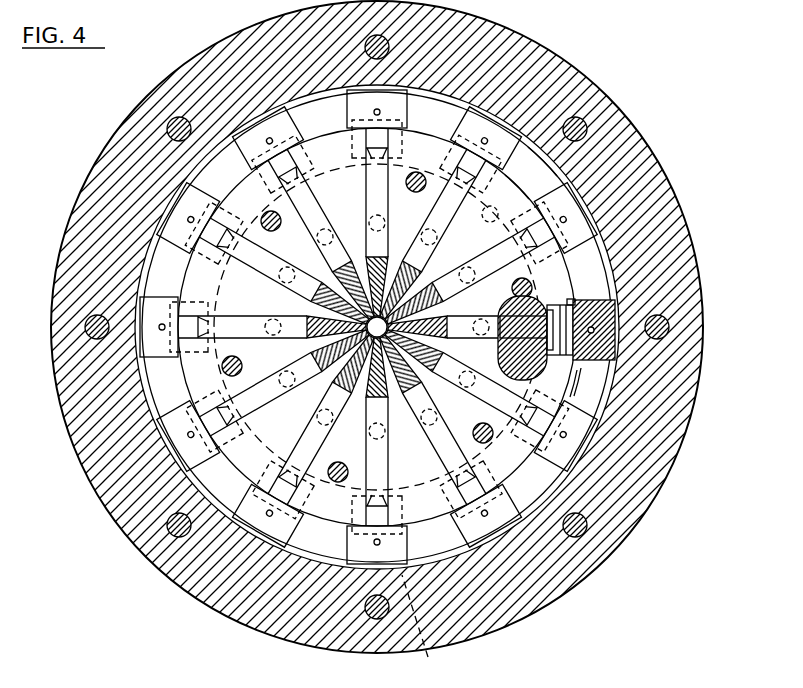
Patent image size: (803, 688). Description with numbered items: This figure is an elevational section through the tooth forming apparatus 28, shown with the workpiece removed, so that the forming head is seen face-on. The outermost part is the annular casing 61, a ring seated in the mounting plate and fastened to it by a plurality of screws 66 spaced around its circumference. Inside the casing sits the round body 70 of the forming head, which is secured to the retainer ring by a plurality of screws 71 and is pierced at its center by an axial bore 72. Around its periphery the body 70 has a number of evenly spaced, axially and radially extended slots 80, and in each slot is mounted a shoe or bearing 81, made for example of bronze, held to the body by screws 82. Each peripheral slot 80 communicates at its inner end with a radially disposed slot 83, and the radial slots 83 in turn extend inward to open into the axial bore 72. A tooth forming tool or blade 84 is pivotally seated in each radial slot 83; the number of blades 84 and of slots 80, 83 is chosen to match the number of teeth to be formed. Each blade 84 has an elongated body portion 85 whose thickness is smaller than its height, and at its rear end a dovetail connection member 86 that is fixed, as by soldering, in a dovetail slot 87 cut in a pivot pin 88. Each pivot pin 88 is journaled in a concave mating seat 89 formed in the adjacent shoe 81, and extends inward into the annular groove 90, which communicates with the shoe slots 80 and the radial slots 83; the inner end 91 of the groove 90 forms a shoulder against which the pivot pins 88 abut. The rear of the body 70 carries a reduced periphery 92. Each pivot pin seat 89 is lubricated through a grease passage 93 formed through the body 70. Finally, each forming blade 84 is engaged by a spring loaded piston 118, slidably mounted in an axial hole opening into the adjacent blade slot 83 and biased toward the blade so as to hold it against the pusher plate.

The tooth forming apparatus 28 is at (584, 589).
The annular casing 61 is at (518, 605).
The screws 66 is at (586, 126).
The round body 70 is at (518, 494).
The screws 71 is at (242, 363).
The axial bore 72 is at (468, 274).
The slots 80 is at (600, 303).
The shoe or bearing 81 is at (598, 330).
The screws 82 is at (429, 626).
The radial slot 83 is at (377, 299).
The tooth forming tool or blade 84 is at (366, 327).
The elongated body portion 85 is at (272, 310).
The dovetail connection member 86 is at (500, 327).
The dovetail slot 87 is at (562, 322).
The pivot pin 88 is at (562, 350).
The concave mating seat 89 is at (571, 383).
The annular groove 90 is at (572, 303).
The inner end of the groove 91 is at (532, 355).
The reduced periphery 92 is at (531, 173).
The grease passage 93 is at (605, 338).
The spring loaded piston 118 is at (328, 228).